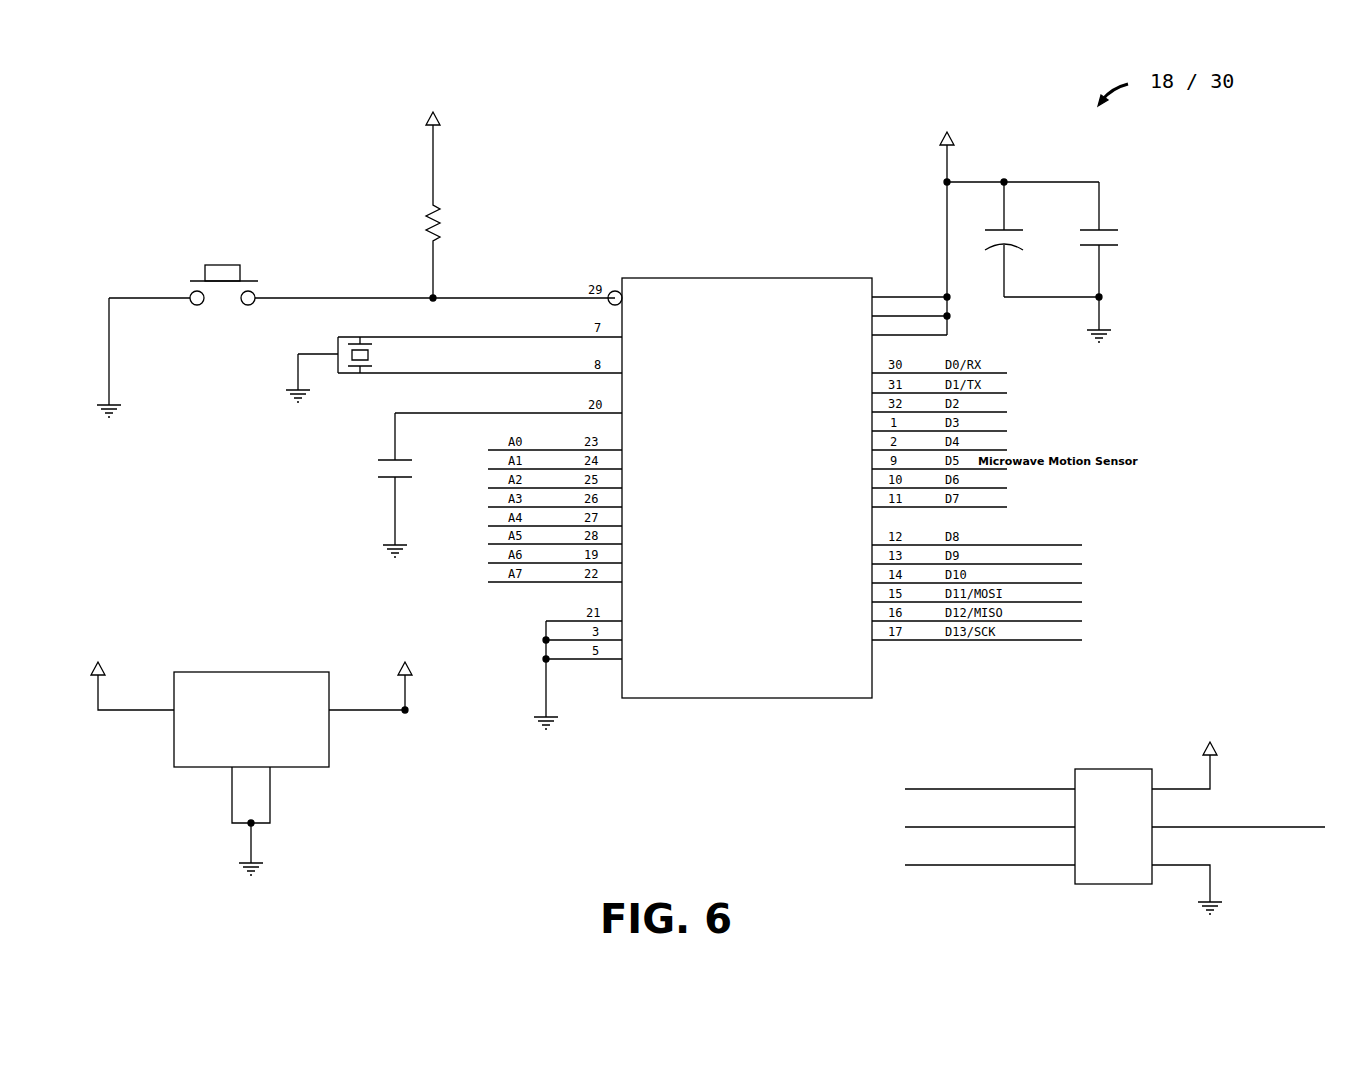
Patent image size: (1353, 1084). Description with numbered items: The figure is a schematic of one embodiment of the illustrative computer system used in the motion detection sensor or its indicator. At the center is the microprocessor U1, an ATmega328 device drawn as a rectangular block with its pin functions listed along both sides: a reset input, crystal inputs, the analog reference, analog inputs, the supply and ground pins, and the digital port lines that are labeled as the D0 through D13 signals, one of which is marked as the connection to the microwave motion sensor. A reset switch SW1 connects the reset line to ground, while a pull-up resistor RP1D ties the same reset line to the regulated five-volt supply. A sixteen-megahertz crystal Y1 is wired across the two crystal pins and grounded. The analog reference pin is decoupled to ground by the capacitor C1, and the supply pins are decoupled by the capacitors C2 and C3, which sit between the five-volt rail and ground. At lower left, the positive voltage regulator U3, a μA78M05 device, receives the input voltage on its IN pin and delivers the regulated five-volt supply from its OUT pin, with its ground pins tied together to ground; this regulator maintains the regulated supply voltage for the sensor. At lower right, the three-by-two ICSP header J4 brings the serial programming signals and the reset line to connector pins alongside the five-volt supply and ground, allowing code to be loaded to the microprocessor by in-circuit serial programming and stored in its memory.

The microprocessor ATMEGA328 U1 is at (740, 458).
The +5V regulator UA78M05 U3 is at (247, 757).
The AREF capacitor 0.1uF C1 is at (500, 476).
The capacitor 4.7uF C2 is at (985, 223).
The capacitor 0.1uF C3 is at (1118, 262).
The 16MHz crystal Y1 is at (454, 355).
The reset switch SW1 is at (356, 330).
The 1K pull-up resistor RP1D is at (435, 196).
The ICSP header HEAD3X2 J4 is at (1115, 812).